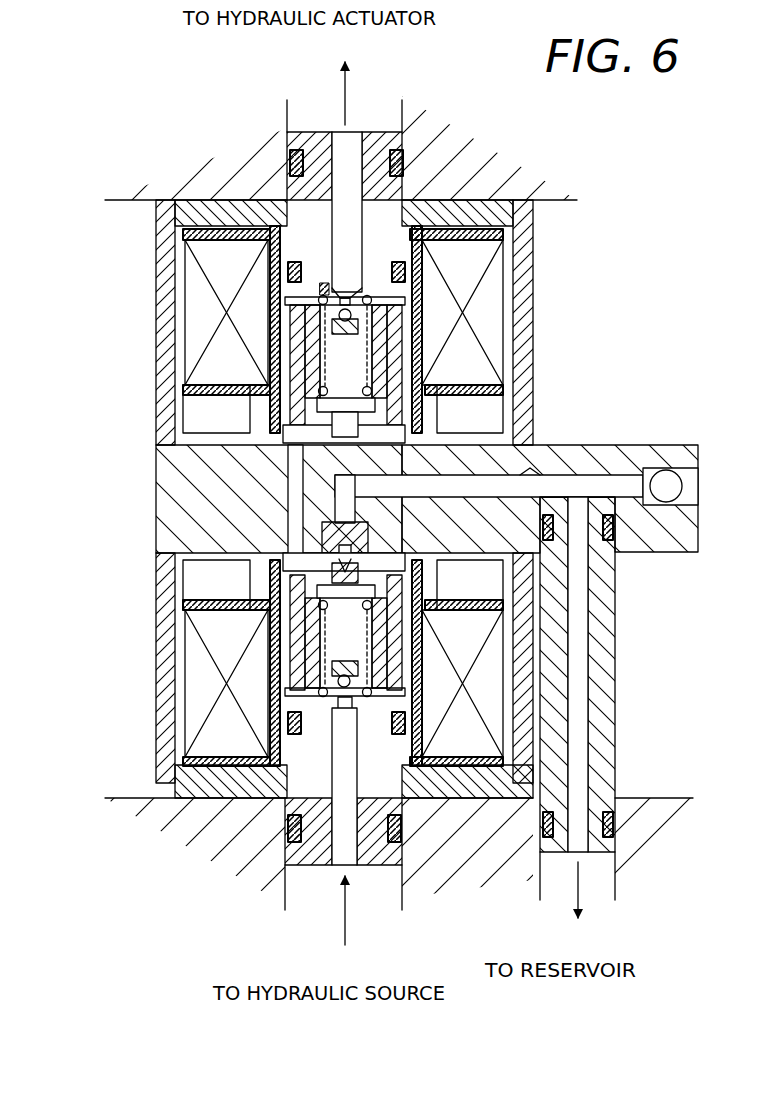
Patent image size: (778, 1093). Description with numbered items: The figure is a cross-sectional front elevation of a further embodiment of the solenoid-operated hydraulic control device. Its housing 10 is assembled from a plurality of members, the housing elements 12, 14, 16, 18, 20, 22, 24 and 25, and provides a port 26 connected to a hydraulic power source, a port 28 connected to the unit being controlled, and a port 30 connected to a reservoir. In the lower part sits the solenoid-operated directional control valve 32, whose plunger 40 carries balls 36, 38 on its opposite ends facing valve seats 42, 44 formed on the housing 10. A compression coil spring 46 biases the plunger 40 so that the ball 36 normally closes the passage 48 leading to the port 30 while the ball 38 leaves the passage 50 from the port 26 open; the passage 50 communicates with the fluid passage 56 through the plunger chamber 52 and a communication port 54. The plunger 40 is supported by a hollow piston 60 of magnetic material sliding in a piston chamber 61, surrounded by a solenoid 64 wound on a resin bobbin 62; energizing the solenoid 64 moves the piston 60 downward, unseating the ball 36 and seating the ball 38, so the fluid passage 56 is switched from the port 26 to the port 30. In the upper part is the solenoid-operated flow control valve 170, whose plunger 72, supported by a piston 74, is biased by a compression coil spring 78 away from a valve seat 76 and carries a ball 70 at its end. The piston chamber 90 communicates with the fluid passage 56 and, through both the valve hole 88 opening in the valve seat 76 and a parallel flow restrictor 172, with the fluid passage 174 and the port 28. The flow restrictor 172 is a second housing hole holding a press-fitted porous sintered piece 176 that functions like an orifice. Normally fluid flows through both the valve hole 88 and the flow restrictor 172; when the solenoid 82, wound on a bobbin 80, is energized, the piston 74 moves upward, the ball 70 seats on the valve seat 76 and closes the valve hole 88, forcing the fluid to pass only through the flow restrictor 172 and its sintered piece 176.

The housing 10 is at (580, 210).
The housing element 12 is at (130, 196).
The housing element 14 is at (165, 214).
The housing element 16 is at (166, 267).
The housing element 18 is at (170, 456).
The housing element 20 is at (168, 598).
The housing element 22 is at (165, 790).
The housing element 24 is at (645, 808).
The housing element 25 is at (600, 722).
The port 26 is at (308, 888).
The port 28 is at (312, 112).
The port 30 is at (594, 885).
The solenoid-operated directional control valve 32 is at (150, 668).
The ball 36 is at (372, 556).
The ball 38 is at (400, 690).
The plunger 40 is at (430, 635).
The valve seat 42 is at (325, 566).
The valve seat 44 is at (360, 700).
The compression coil spring 46 is at (352, 640).
The passage 48 is at (538, 485).
The passage 50 is at (348, 868).
The plunger chamber 52 is at (330, 652).
The communication port 54 is at (310, 610).
The fluid passage 56 is at (290, 490).
The hollow piston 60 is at (345, 662).
The piston chamber 61 is at (285, 700).
The bobbin 62 is at (182, 578).
The solenoid 64 is at (195, 720).
The ball 70 is at (352, 320).
The plunger 72 is at (300, 322).
The piston 74 is at (310, 374).
The valve seat 76 is at (400, 322).
The compression coil spring 78 is at (440, 380).
The bobbin 80 is at (500, 400).
The solenoid 82 is at (490, 282).
The valve hole 88 is at (412, 296).
The piston chamber 90 is at (268, 305).
The solenoid-operated flow control valve 170 is at (150, 352).
The flow restrictor 172 is at (330, 288).
The fluid passage 174 is at (347, 142).
The sintered piece 176 is at (350, 270).